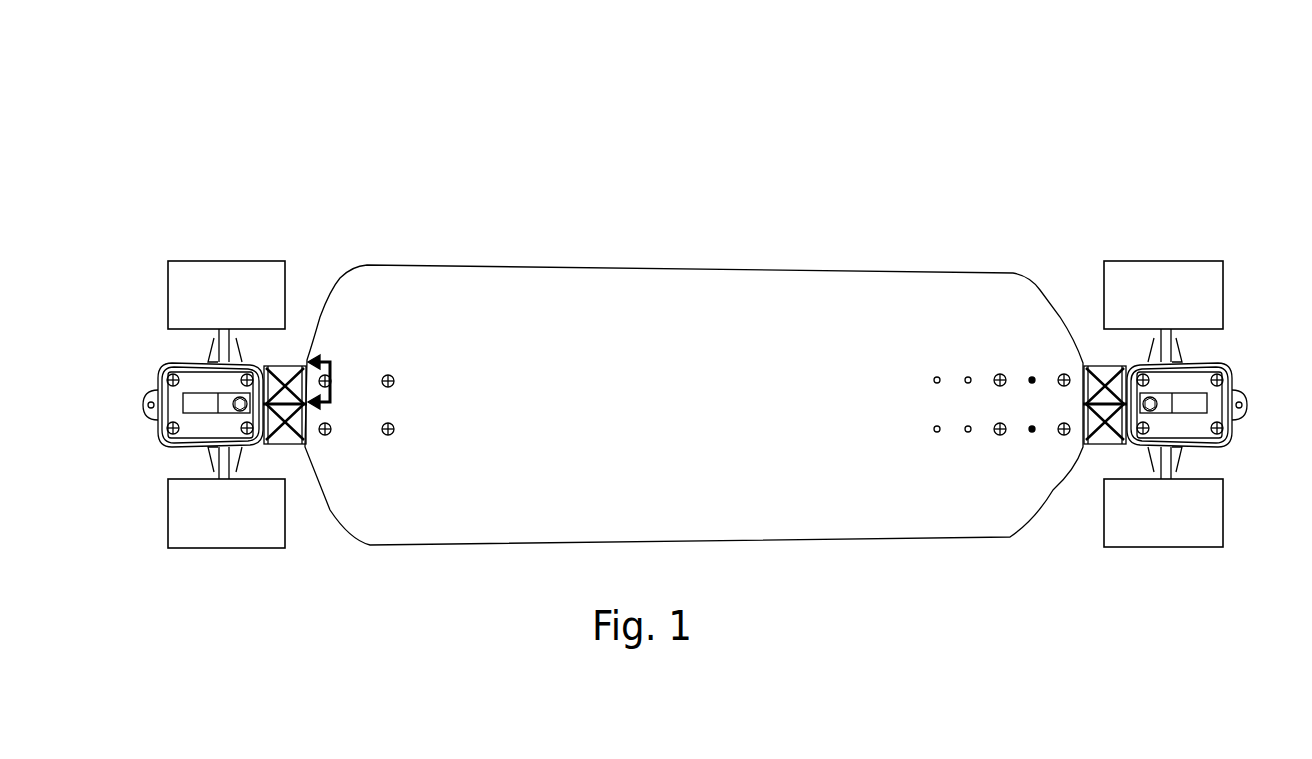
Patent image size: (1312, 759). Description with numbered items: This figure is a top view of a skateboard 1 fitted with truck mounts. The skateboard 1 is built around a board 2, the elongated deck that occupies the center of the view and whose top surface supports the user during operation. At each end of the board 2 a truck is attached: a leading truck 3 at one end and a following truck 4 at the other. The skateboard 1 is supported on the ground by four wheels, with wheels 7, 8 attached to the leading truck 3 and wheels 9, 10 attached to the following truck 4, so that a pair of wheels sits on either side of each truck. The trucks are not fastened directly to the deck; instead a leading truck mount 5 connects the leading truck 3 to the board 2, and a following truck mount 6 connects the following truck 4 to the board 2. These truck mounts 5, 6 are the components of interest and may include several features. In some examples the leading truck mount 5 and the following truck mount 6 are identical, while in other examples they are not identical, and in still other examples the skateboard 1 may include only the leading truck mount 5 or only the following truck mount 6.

The skateboard 1 is at (757, 162).
The board 2 is at (758, 332).
The leading truck 3 is at (310, 165).
The following truck 4 is at (1133, 163).
The leading truck mount 5 is at (277, 367).
The following truck mount 6 is at (1110, 430).
The wheel 7 is at (240, 538).
The wheel 8 is at (200, 278).
The wheel 9 is at (1173, 523).
The wheel 10 is at (1190, 280).